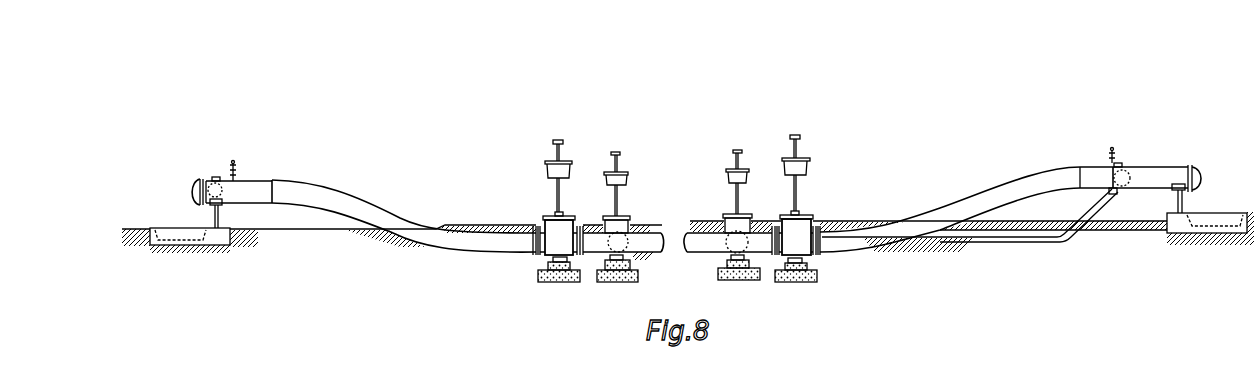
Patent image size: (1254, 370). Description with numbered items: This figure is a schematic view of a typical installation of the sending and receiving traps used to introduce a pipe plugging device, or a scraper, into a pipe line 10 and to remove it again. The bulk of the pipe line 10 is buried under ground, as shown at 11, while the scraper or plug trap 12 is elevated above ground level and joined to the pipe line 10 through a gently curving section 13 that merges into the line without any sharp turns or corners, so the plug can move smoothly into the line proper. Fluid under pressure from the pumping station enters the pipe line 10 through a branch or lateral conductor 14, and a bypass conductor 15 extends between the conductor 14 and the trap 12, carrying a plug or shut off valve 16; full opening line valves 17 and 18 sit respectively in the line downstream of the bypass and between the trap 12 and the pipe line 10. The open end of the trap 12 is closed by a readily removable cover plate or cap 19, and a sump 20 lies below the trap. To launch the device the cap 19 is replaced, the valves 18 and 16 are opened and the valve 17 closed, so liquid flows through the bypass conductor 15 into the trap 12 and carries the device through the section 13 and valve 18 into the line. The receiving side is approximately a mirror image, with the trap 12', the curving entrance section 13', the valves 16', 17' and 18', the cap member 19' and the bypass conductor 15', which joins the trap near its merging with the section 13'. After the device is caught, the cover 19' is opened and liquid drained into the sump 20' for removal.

The pipe line 10 is at (643, 237).
The buried portion of pipe line 11 is at (703, 248).
The scraper or plug trap 12 is at (242, 178).
The receiving trap 12' is at (1134, 159).
The gently curving section 13 is at (404, 216).
The gently curving entrance section 13' is at (950, 209).
The branch or lateral conductor 14 is at (607, 253).
The bypass conductor 15 is at (240, 210).
The bypass conductor 15' is at (1029, 226).
The plug or shut off valve 16 is at (212, 167).
The shut off valve 16' is at (1124, 147).
The full opening line valve 17 is at (610, 208).
The full opening line valve 17' is at (727, 215).
The full opening line valve 18 is at (549, 206).
The full opening line valve 18' is at (816, 208).
The cover plate or cap 19 is at (178, 192).
The cap member 19' is at (1192, 161).
The sump 20 is at (199, 253).
The sump 20' is at (1193, 240).